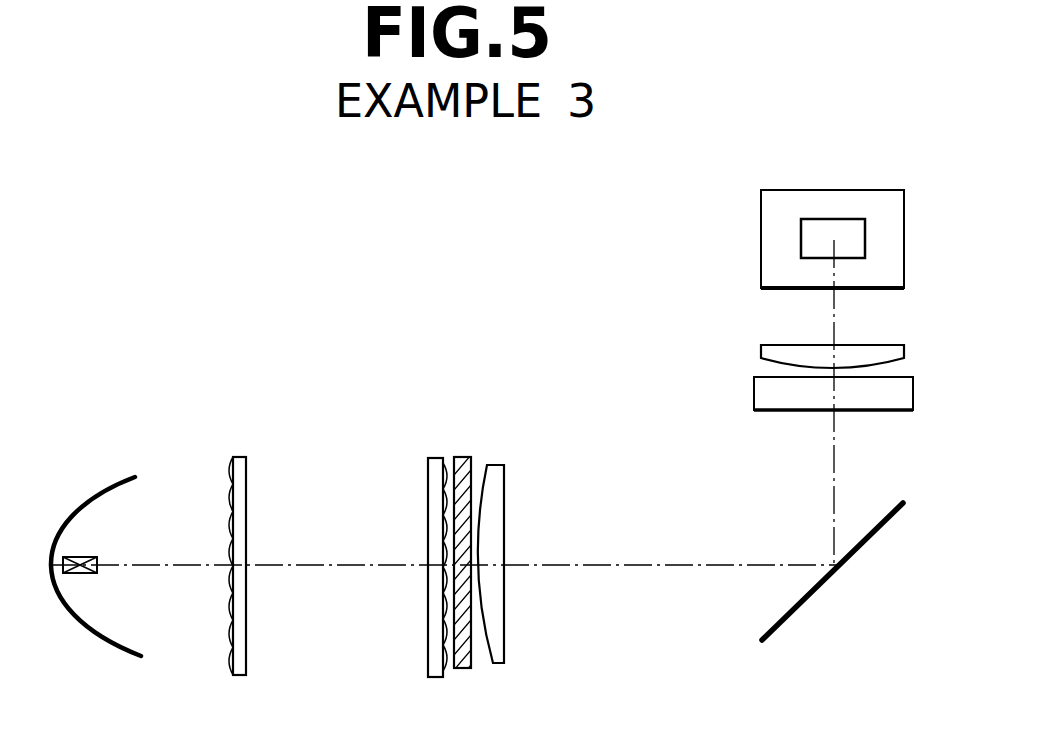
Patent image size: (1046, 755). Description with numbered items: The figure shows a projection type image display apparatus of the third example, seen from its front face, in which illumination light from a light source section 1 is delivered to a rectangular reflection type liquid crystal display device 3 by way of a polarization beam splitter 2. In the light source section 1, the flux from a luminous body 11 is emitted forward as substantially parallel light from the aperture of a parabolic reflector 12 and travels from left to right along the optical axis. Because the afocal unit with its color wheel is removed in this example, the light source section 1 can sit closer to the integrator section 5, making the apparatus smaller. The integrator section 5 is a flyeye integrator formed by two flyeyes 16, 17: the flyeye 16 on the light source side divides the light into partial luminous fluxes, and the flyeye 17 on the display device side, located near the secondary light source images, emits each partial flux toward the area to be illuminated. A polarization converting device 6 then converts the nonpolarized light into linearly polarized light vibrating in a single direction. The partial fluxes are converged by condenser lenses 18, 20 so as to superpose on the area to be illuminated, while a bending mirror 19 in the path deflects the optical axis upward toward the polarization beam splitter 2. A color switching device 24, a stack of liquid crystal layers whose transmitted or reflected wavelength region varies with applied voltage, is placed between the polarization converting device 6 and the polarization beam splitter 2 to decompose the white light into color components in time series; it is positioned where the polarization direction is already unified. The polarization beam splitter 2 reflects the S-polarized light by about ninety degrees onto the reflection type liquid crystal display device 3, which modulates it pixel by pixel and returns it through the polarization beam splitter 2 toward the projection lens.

The light source section 1 is at (102, 462).
The luminous body 11 is at (97, 573).
The parabolic reflector 12 is at (127, 485).
The integrator section 5 is at (443, 447).
The flyeye 16 is at (246, 677).
The flyeye 17 is at (438, 668).
The polarization converting device 6 is at (466, 457).
The condenser lens 18 is at (500, 657).
The bending mirror 19 is at (775, 627).
The color switching device 24 is at (760, 397).
The condenser lens 20 is at (766, 354).
The polarization beam splitter 2 is at (765, 262).
The reflection type liquid crystal display device 3 is at (800, 238).